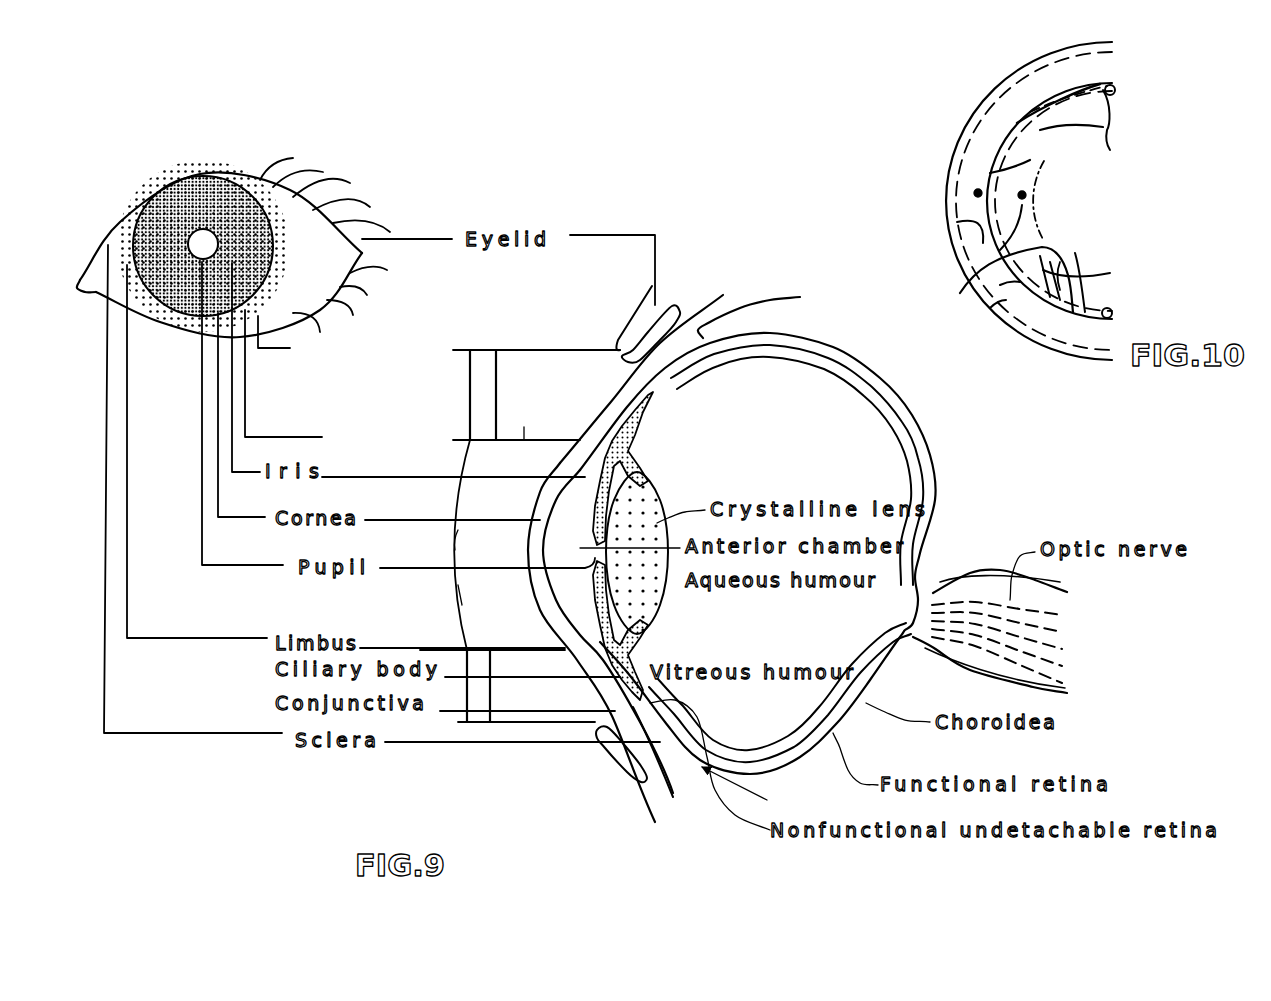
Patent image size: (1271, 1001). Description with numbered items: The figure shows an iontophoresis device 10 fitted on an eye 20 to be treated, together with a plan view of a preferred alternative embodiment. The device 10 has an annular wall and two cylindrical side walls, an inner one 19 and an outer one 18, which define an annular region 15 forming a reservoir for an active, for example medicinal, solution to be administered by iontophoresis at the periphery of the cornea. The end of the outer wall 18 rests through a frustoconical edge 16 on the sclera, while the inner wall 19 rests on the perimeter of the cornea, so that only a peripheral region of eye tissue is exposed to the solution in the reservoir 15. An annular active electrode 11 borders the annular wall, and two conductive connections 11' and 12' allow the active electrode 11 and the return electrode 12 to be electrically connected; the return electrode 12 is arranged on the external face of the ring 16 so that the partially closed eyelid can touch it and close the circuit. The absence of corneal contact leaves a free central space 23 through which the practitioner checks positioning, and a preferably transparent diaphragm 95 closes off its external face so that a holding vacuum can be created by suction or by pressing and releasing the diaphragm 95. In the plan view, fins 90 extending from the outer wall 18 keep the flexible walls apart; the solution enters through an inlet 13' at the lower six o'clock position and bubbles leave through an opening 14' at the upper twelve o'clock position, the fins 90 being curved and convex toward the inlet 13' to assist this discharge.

In FIG. 9, the eye 20 is at (100, 194).
In FIG. 9, the device 10 is at (236, 165).
In FIG. 9, the annular active electrode 11 is at (524, 324).
In FIG. 10, the annular active electrode 11 is at (1010, 128).
In FIG. 9, the return electrode 12 is at (593, 539).
In FIG. 10, the return electrode 12 is at (986, 332).
In FIG. 9, the annular region 15 is at (522, 428).
In FIG. 9, the frustoconical edge 16 is at (672, 290).
In FIG. 9, the central space 23 is at (470, 533).
In FIG. 9, the diaphragm 95 is at (470, 590).
In FIG. 10, the conductive connection 11' is at (1047, 215).
In FIG. 10, the conductive connection 12' is at (943, 163).
In FIG. 10, the inlet 13' is at (1036, 264).
In FIG. 10, the opening 14' is at (1082, 194).
In FIG. 10, the outer cylindrical side wall 18 is at (950, 243).
In FIG. 10, the inner cylindrical side wall 19 is at (1075, 264).
In FIG. 10, the fins 90 is at (1040, 290).